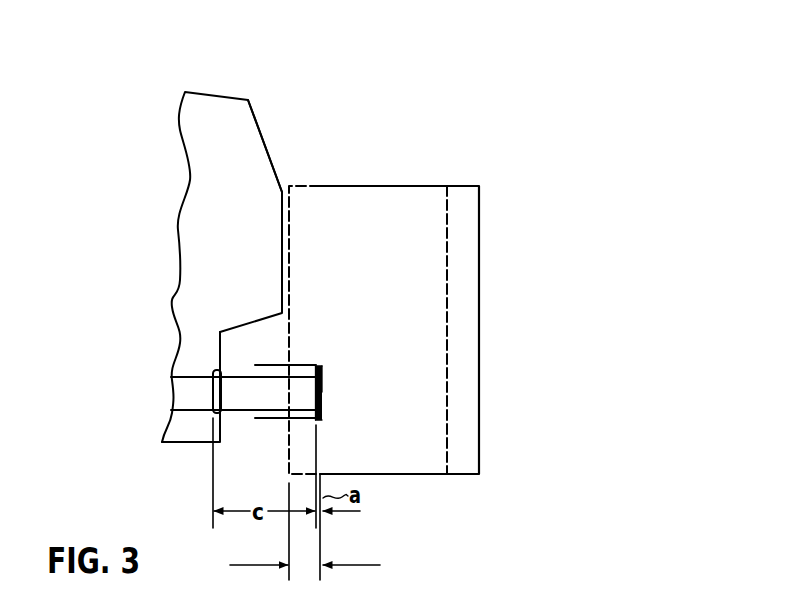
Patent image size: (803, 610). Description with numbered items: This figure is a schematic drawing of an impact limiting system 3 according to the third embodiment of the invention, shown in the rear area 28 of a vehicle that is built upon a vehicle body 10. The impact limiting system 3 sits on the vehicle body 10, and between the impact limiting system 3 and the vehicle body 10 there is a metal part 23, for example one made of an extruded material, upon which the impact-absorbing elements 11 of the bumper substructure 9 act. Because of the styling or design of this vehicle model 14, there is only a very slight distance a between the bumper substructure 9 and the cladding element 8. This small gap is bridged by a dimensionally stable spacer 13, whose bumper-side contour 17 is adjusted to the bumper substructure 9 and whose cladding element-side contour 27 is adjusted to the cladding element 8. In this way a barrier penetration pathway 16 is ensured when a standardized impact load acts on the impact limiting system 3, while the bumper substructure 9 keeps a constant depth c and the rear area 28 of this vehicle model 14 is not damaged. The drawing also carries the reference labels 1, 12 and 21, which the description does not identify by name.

The fuel injector / component assembly 1 is at (210, 235).
The impact limiting system 3 is at (371, 139).
The cladding element 8 is at (323, 418).
The bumper substructure 9 is at (238, 404).
The vehicle body 10 is at (184, 395).
The impact-absorbing elements 11 is at (233, 380).
The upper corner of sealing element 12 is at (319, 367).
The dimensionally stable spacer 13 is at (323, 372).
The vehicle model 14 is at (250, 118).
The barrier penetration pathway 16 is at (305, 527).
The bumper-side contour 17 is at (311, 391).
The flange 21 is at (303, 365).
The metal part 23 is at (216, 402).
The cladding element-side contour 27 is at (323, 388).
The rear area 28 is at (269, 147).